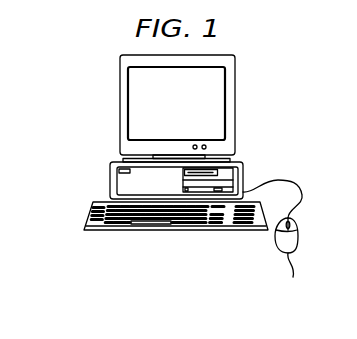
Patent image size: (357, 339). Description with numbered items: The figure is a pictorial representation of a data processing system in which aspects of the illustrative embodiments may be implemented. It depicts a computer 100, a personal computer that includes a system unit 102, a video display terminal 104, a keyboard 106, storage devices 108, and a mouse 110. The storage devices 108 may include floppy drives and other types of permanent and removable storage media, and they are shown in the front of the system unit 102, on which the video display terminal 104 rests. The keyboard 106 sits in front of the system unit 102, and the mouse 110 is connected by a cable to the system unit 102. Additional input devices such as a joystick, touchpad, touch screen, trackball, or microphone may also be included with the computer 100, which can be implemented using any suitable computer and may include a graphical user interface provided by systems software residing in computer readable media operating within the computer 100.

The computer 100 is at (68, 92).
The system unit 102 is at (110, 177).
The video display terminal 104 is at (235, 105).
The keyboard 106 is at (107, 231).
The storage devices 108 is at (245, 176).
The mouse 110 is at (275, 240).